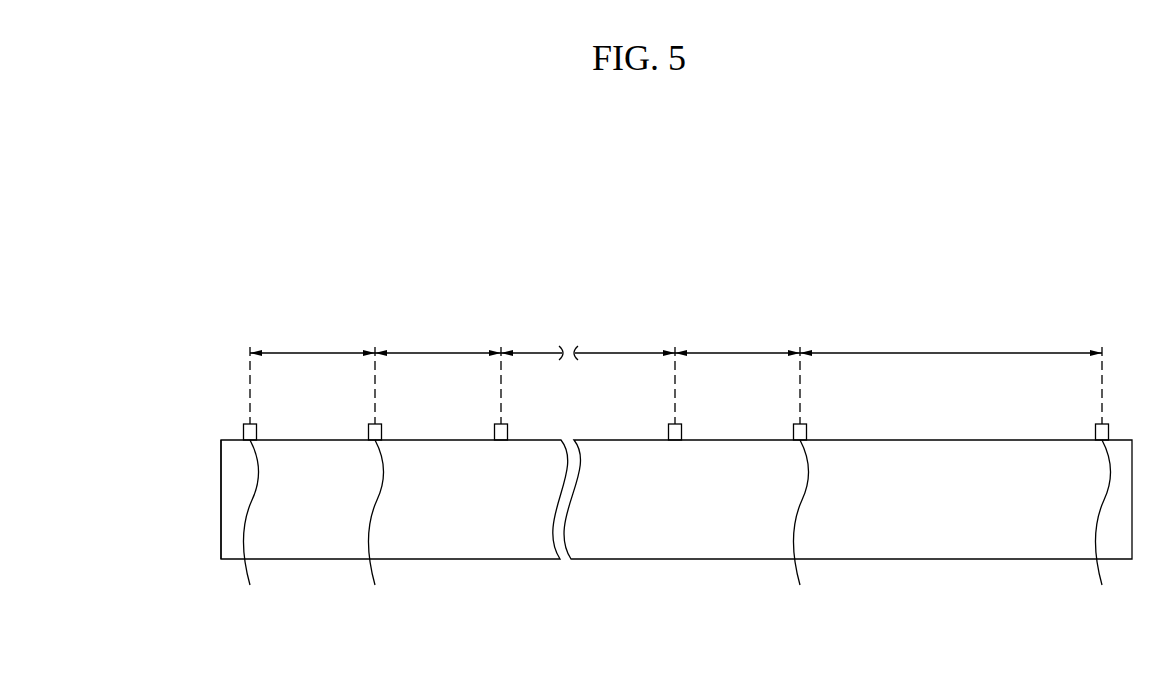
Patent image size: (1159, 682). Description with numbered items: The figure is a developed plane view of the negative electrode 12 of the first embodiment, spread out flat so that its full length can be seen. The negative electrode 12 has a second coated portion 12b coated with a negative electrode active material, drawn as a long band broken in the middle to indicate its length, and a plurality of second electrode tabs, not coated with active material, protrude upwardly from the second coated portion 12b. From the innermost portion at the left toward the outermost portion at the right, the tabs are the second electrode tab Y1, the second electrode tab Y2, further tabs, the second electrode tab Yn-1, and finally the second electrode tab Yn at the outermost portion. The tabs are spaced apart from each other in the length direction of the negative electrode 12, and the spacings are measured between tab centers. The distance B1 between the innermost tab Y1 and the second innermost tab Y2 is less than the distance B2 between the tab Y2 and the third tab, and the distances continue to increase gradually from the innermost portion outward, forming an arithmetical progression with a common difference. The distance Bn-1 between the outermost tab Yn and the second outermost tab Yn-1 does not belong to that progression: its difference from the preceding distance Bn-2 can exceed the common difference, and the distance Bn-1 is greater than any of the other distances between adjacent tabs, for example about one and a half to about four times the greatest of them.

The negative electrode 12 is at (458, 582).
The second coated portion 12b is at (232, 499).
The second electrode tab Y1 is at (254, 480).
The second electrode tab Y2 is at (379, 480).
The second electrode tab Yn-1 is at (817, 480).
The second electrode tab Yn is at (1107, 480).
The distance B1 is at (312, 341).
The distance B2 is at (438, 341).
The distance Bn-2 is at (737, 341).
The distance Bn-1 is at (951, 341).